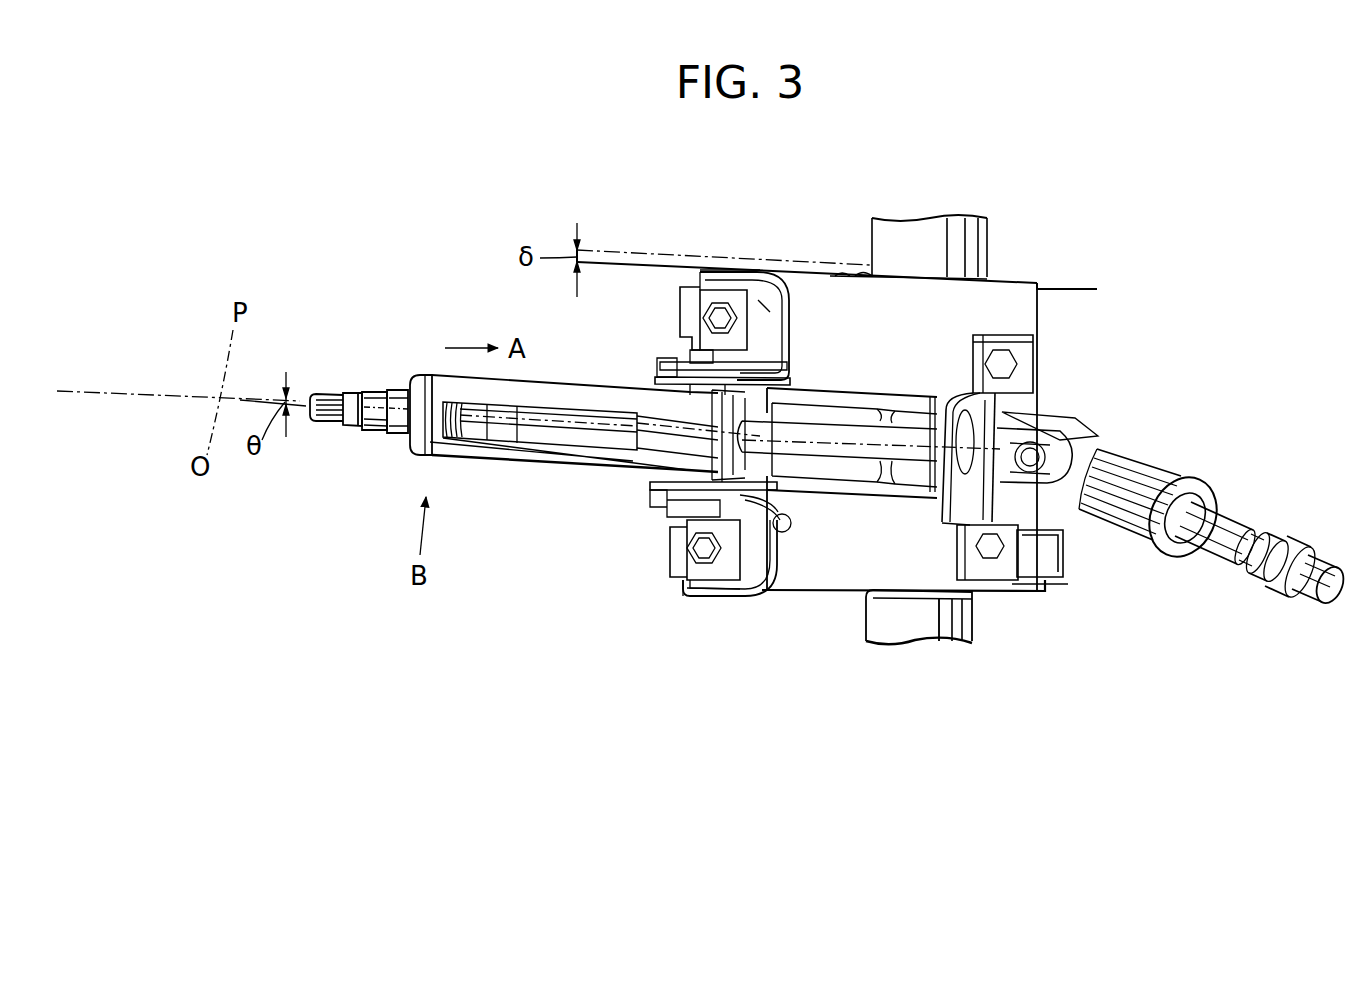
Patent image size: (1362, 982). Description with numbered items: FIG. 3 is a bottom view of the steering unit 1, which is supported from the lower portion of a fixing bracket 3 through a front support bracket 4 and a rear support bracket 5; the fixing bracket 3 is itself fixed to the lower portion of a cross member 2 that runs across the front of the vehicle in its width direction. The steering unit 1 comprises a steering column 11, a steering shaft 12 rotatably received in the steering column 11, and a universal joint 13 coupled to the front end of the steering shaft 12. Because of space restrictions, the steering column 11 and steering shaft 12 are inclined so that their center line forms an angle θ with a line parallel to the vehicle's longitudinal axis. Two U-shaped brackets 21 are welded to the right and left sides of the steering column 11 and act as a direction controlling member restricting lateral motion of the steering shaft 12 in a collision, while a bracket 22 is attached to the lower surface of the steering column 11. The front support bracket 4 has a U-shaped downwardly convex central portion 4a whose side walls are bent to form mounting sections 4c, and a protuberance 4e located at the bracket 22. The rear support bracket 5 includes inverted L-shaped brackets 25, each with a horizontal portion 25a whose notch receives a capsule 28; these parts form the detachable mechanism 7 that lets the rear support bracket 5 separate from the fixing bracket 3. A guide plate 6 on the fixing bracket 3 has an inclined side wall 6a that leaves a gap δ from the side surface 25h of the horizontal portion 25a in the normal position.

The steering unit 1 is at (496, 612).
The cross member 2 is at (960, 214).
The fixing bracket 3 is at (806, 596).
The front support bracket 4 is at (958, 398).
The central portion 4a is at (992, 330).
The mounting sections 4c is at (1027, 350).
The protuberance 4e is at (950, 512).
The rear support bracket 5 is at (684, 600).
The guide plate 6 is at (824, 270).
The side wall 6a is at (737, 270).
The detachable mechanism 7 is at (690, 322).
The steering column 11 is at (504, 470).
The steering shaft 12 is at (368, 428).
The universal joint 13 is at (1162, 456).
The brackets 21 is at (862, 395).
The bracket 22 is at (846, 462).
The brackets 25 is at (789, 300).
The horizontal portion 25a is at (758, 318).
The side surface 25h is at (702, 273).
The capsule 28 is at (712, 586).